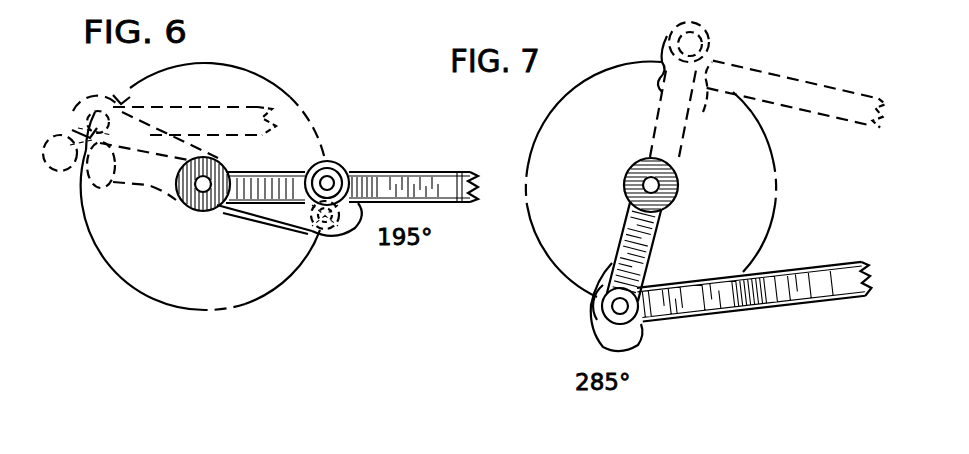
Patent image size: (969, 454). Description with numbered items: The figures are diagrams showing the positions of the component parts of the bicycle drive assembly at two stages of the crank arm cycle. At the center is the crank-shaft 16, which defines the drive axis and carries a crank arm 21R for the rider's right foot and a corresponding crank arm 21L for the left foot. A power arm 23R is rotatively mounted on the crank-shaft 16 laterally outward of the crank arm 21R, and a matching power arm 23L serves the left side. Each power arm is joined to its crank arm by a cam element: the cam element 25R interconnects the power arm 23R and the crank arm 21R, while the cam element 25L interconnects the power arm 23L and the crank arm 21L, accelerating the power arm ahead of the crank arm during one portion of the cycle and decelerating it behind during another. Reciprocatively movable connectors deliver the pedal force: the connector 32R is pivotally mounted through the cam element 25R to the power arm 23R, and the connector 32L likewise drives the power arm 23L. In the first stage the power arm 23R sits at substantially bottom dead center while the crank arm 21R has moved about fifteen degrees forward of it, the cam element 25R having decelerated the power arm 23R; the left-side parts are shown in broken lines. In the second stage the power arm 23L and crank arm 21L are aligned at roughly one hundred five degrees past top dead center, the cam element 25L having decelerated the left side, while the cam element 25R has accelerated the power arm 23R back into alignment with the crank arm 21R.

In FIG. 6, the crank-shaft 16 is at (215, 211).
In FIG. 7, the crank-shaft 16 is at (660, 184).
In FIG. 6, the crank arm 21L is at (163, 194).
In FIG. 7, the crank arm 21L is at (697, 102).
In FIG. 6, the crank arm 21R is at (287, 227).
In FIG. 7, the crank arm 21R is at (590, 311).
In FIG. 6, the power arm 23L is at (177, 148).
In FIG. 7, the power arm 23L is at (667, 36).
In FIG. 6, the power arm 23R is at (297, 164).
In FIG. 7, the power arm 23R is at (614, 268).
In FIG. 6, the cam element 25L is at (80, 158).
In FIG. 7, the cam element 25L is at (670, 88).
In FIG. 6, the cam element 25R is at (347, 230).
In FIG. 7, the cam element 25R is at (702, 369).
In FIG. 6, the connector 32L is at (310, 71).
In FIG. 7, the connector 32L is at (856, 59).
In FIG. 6, the connector 32R is at (438, 154).
In FIG. 7, the connector 32R is at (855, 249).